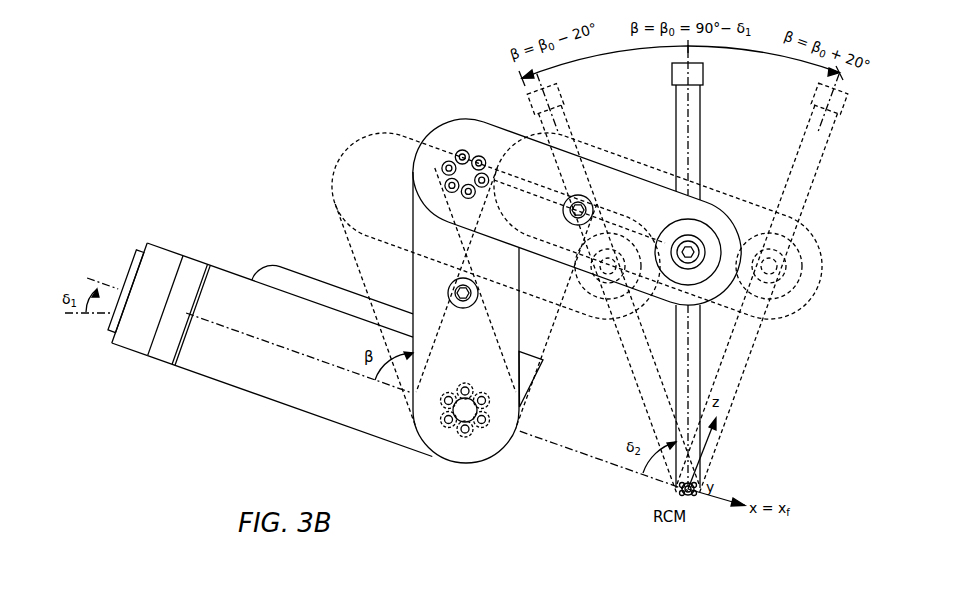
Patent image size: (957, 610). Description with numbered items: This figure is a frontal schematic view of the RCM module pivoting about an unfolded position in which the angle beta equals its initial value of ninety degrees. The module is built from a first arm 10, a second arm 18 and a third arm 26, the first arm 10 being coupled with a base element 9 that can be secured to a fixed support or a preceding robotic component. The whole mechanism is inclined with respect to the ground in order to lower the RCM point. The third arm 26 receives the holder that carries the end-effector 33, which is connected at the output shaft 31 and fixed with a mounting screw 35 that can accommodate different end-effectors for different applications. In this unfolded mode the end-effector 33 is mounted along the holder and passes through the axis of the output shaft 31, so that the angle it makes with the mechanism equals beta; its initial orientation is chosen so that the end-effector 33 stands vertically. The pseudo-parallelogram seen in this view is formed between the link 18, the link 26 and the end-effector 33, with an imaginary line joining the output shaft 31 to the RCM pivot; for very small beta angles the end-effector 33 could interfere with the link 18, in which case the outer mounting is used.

The base element 9 is at (161, 253).
The first arm 10 is at (237, 276).
The second arm 18 is at (487, 447).
The third arm 26 is at (443, 138).
The output shaft 31 is at (695, 230).
The end-effector 33 is at (695, 123).
The mounting screw 35 is at (703, 244).